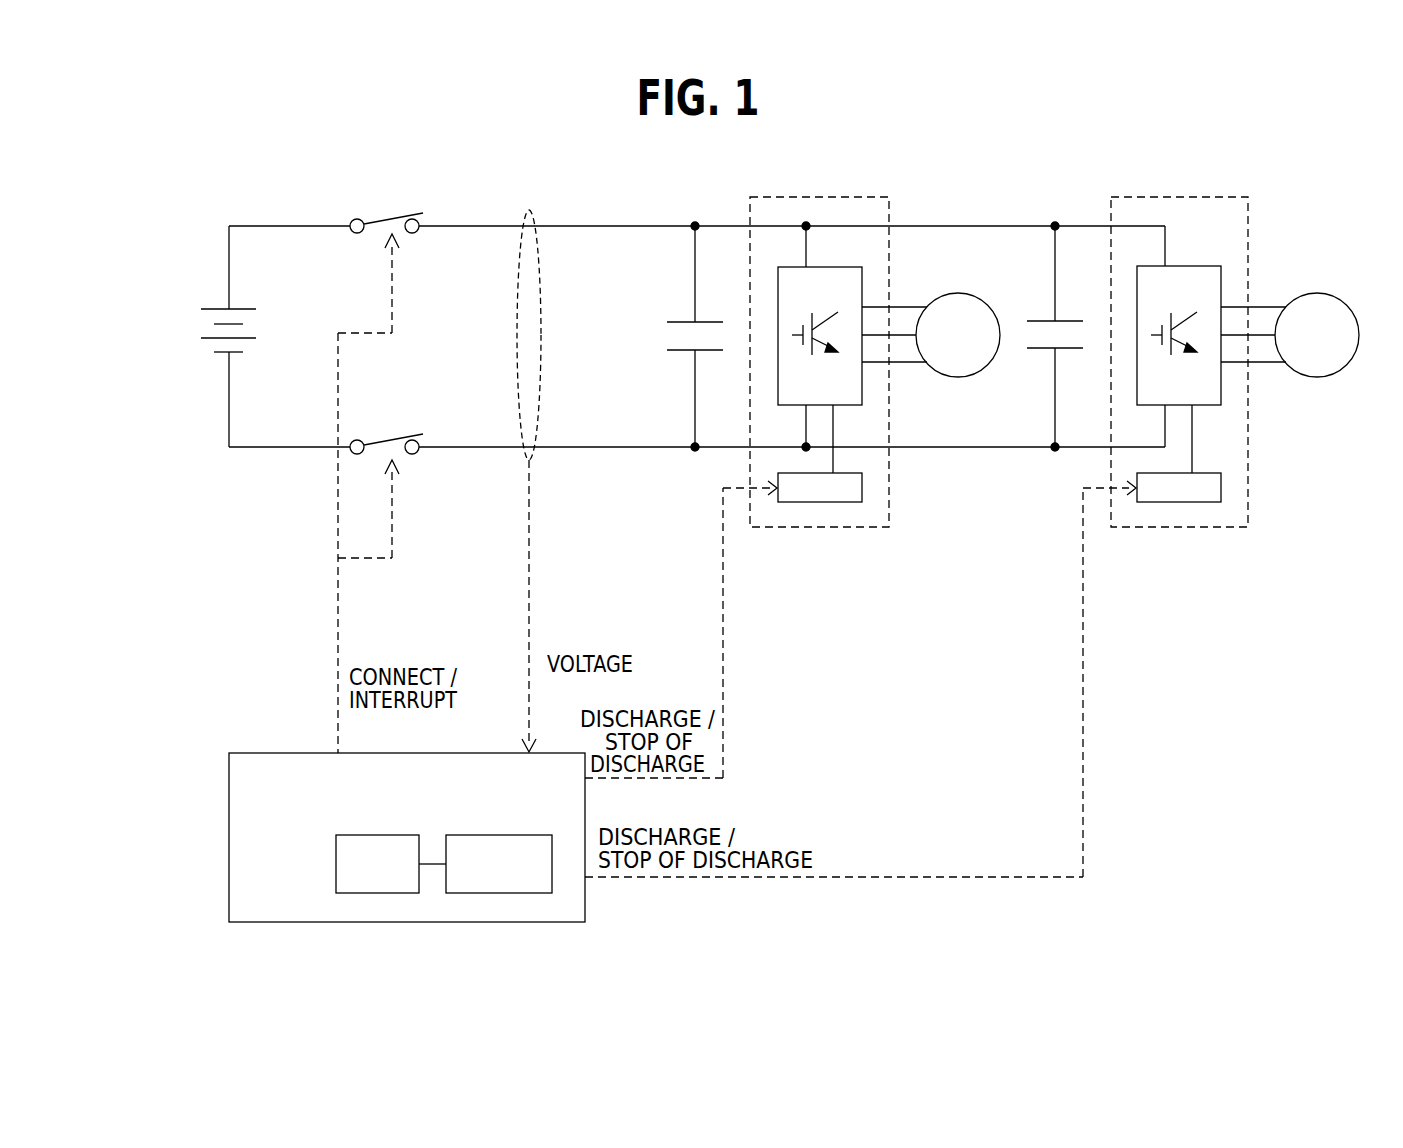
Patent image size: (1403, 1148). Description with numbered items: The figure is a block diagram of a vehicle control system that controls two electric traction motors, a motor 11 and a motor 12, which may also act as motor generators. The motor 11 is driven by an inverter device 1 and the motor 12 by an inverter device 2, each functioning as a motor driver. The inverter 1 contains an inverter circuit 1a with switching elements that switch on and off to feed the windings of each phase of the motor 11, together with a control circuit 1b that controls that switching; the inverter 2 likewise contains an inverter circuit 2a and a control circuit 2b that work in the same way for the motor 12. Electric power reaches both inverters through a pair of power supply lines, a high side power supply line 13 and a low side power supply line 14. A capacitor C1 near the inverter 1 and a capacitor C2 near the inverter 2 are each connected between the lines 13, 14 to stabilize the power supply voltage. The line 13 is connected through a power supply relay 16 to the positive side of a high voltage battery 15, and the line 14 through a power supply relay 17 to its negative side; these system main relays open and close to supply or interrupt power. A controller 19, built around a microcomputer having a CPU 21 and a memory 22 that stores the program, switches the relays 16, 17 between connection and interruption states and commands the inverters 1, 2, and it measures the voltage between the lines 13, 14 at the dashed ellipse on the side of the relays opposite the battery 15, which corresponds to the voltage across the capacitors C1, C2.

The inverter device 1 is at (862, 197).
The inverter circuit 1a is at (820, 267).
The control circuit 1b is at (862, 488).
The inverter device 2 is at (1222, 197).
The inverter circuit 2a is at (1179, 266).
The control circuit 2b is at (1221, 488).
The motor 11 is at (955, 294).
The motor 12 is at (1314, 294).
The power supply line 13 is at (612, 226).
The power supply line 14 is at (612, 447).
The high voltage battery 15 is at (200, 325).
The power supply relay 16 is at (392, 209).
The power supply relay 17 is at (392, 430).
The controller 19 is at (229, 785).
The CPU 21 is at (363, 835).
The memory 22 is at (475, 835).
The capacitor C1 is at (713, 312).
The capacitor C2 is at (1073, 312).